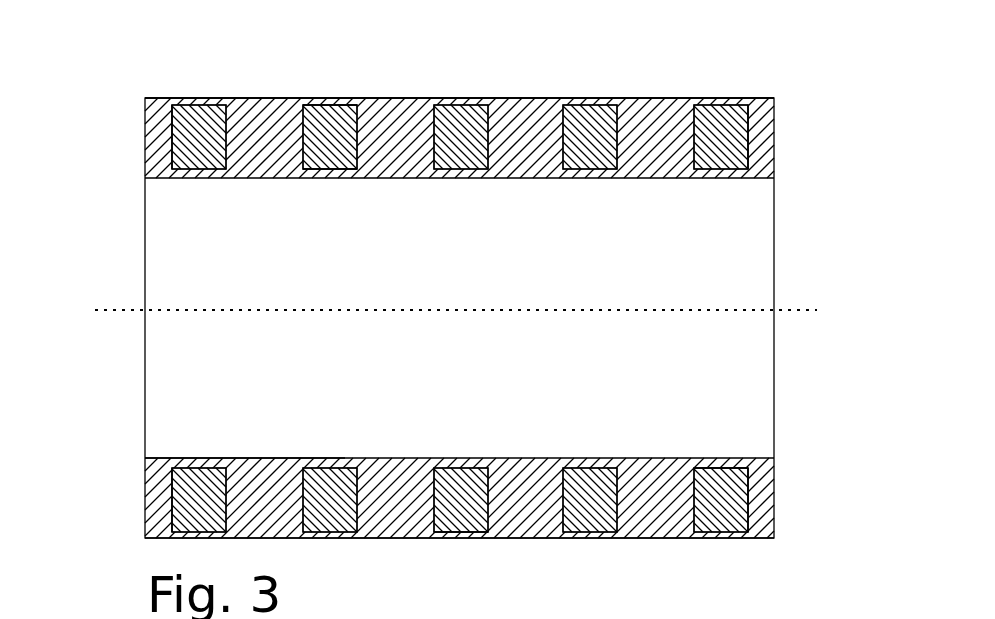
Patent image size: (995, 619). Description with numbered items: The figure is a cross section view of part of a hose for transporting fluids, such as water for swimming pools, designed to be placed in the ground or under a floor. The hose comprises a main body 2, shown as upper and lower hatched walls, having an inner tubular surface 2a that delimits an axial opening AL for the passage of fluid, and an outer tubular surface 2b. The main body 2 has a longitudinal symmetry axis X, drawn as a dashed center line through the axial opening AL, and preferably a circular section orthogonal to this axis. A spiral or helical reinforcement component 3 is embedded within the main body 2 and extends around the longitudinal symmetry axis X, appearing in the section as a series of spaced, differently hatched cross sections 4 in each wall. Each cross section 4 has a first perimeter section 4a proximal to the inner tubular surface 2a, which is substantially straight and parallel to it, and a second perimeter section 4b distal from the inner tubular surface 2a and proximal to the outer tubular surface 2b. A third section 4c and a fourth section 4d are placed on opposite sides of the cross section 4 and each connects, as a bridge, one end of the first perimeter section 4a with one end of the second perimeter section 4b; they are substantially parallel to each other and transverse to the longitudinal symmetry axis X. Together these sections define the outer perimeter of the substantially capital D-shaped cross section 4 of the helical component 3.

The main body 2 is at (773, 100).
The inner tubular surface 2a is at (658, 178).
The outer tubular surface 2b is at (632, 100).
The spiral or helical reinforcement component 3 is at (307, 100).
The cross section 4 is at (483, 100).
The first perimeter section 4a is at (331, 178).
The second perimeter section 4b is at (337, 100).
The third section 4c is at (172, 141).
The fourth section 4d is at (748, 139).
The axial opening AL is at (345, 458).
The longitudinal symmetry axis X is at (457, 310).